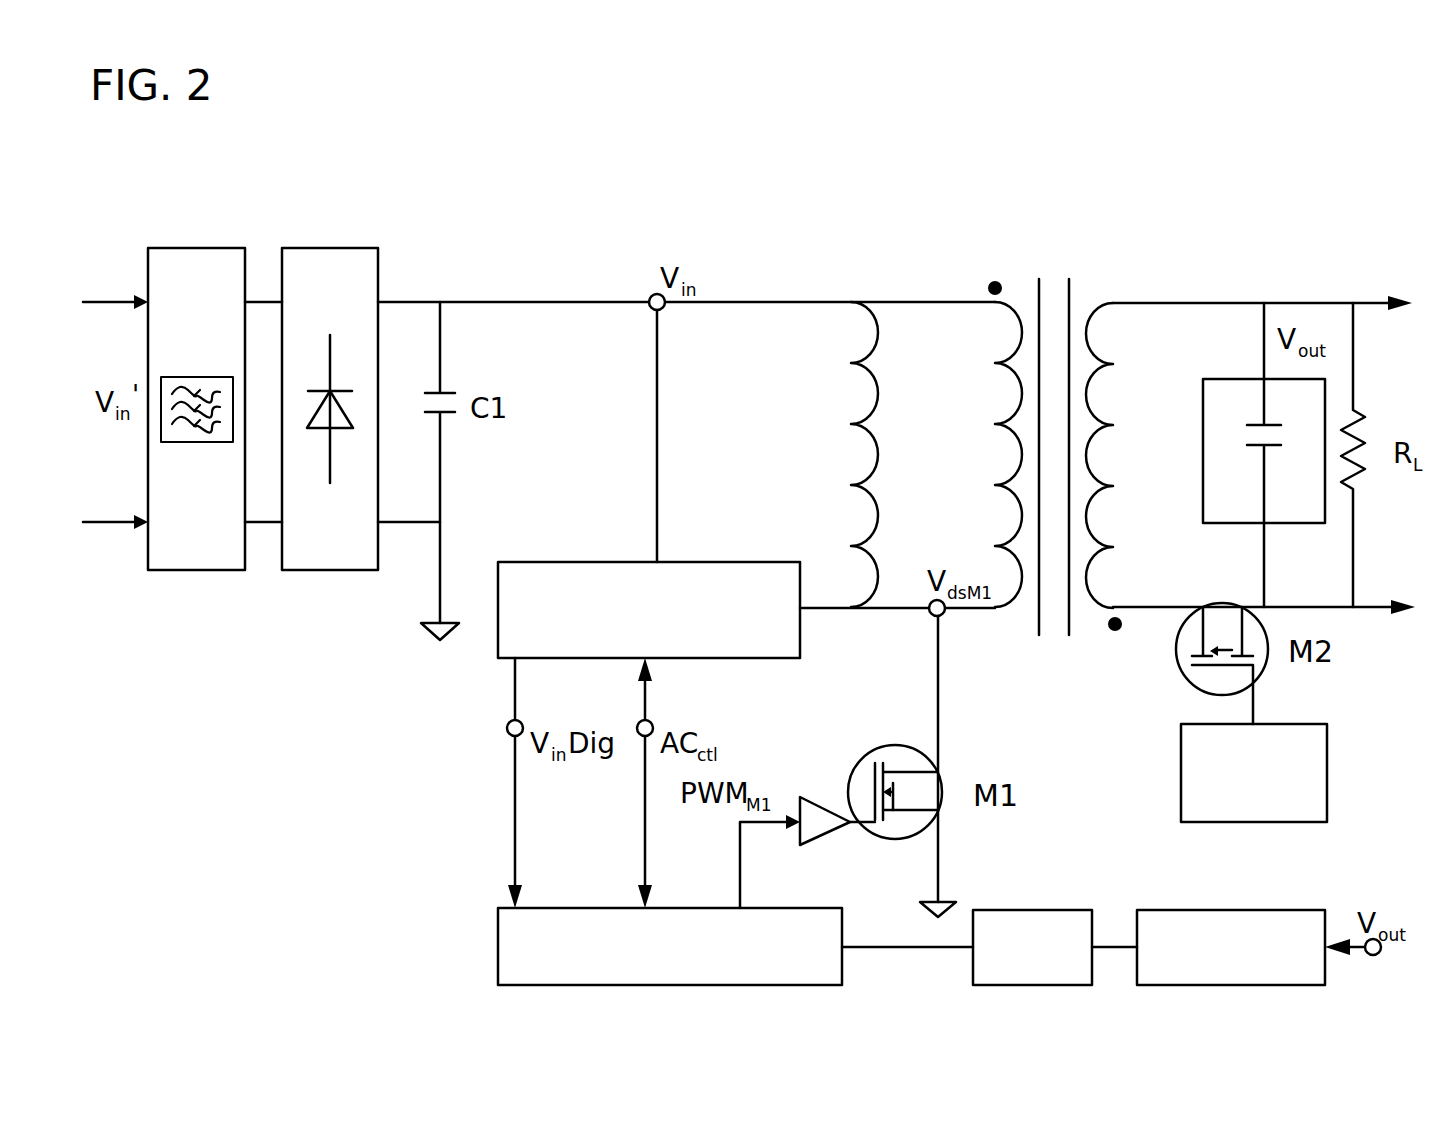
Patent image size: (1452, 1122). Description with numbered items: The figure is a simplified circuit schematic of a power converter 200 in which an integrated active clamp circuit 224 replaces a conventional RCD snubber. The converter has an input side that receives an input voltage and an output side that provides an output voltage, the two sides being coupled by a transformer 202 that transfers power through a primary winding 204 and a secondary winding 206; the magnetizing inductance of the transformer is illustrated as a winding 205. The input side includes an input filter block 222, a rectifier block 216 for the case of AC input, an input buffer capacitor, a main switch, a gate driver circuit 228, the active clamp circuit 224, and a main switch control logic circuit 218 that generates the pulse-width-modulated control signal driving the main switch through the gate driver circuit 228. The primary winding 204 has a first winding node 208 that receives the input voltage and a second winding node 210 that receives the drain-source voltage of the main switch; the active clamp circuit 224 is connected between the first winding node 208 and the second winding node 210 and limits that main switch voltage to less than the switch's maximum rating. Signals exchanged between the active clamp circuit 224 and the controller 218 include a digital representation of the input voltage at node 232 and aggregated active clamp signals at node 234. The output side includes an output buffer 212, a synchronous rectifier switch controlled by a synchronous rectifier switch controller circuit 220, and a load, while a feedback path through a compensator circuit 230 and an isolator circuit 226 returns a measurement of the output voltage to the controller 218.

The power converter 200 is at (147, 156).
The transformer 202 is at (1060, 420).
The primary winding 204 is at (969, 253).
The winding 205 is at (879, 462).
The secondary winding 206 is at (1078, 253).
The first winding node 208 is at (650, 295).
The second winding node 210 is at (944, 616).
The output buffer 212 is at (1316, 516).
The rectifier block 216 is at (373, 563).
The main switch control logic circuit 218 is at (836, 979).
The synchronous rectifier switch controller circuit 220 is at (1320, 813).
The input filter block 222 is at (238, 563).
The active clamp circuit 224 is at (796, 654).
The isolator circuit 226 is at (1056, 909).
The gate driver circuit 228 is at (818, 840).
The compensator circuit 230 is at (1193, 909).
The node 232 is at (530, 722).
The node 234 is at (662, 722).